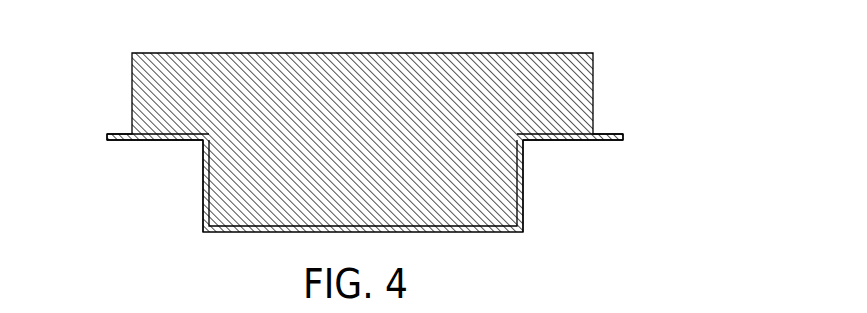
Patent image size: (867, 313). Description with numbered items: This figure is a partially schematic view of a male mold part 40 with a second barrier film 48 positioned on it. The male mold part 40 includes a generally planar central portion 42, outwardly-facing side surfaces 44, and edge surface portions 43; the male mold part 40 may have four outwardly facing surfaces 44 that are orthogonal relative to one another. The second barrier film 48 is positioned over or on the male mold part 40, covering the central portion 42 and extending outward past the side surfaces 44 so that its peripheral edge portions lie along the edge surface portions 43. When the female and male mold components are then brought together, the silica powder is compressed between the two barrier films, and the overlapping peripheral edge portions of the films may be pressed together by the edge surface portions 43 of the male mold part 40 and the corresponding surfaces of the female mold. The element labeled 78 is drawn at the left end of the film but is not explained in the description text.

The heat sink / block body 40 is at (595, 72).
The channel 42 is at (448, 232).
The flange end portions 43 is at (155, 143).
The channel side walls 44 is at (204, 180).
The right flange 48 is at (605, 143).
The left flange 78 is at (117, 145).